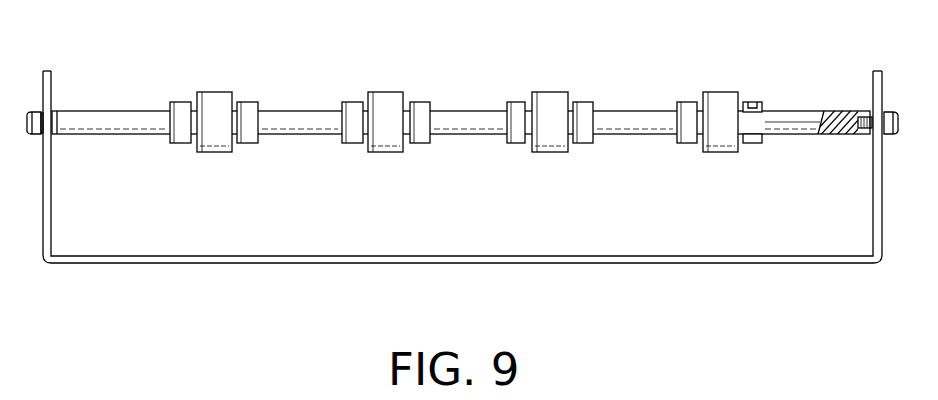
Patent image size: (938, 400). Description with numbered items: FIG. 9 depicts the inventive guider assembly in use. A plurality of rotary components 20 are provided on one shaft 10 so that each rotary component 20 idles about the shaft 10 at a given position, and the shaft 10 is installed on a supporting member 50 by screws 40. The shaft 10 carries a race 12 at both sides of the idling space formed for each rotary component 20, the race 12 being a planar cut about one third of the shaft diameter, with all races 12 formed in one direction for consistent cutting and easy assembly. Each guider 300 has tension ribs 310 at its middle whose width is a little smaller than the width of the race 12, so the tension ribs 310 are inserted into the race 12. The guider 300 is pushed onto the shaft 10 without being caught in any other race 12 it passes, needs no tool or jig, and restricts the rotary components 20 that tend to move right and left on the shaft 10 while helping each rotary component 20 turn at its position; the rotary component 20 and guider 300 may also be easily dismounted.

The shaft 10 is at (334, 118).
The race 12 is at (762, 112).
The rotary component 20 is at (200, 100).
The screw 40 is at (26, 117).
The supporting member 50 is at (313, 258).
The guider 300 is at (172, 105).
The tension rib 310 is at (757, 103).